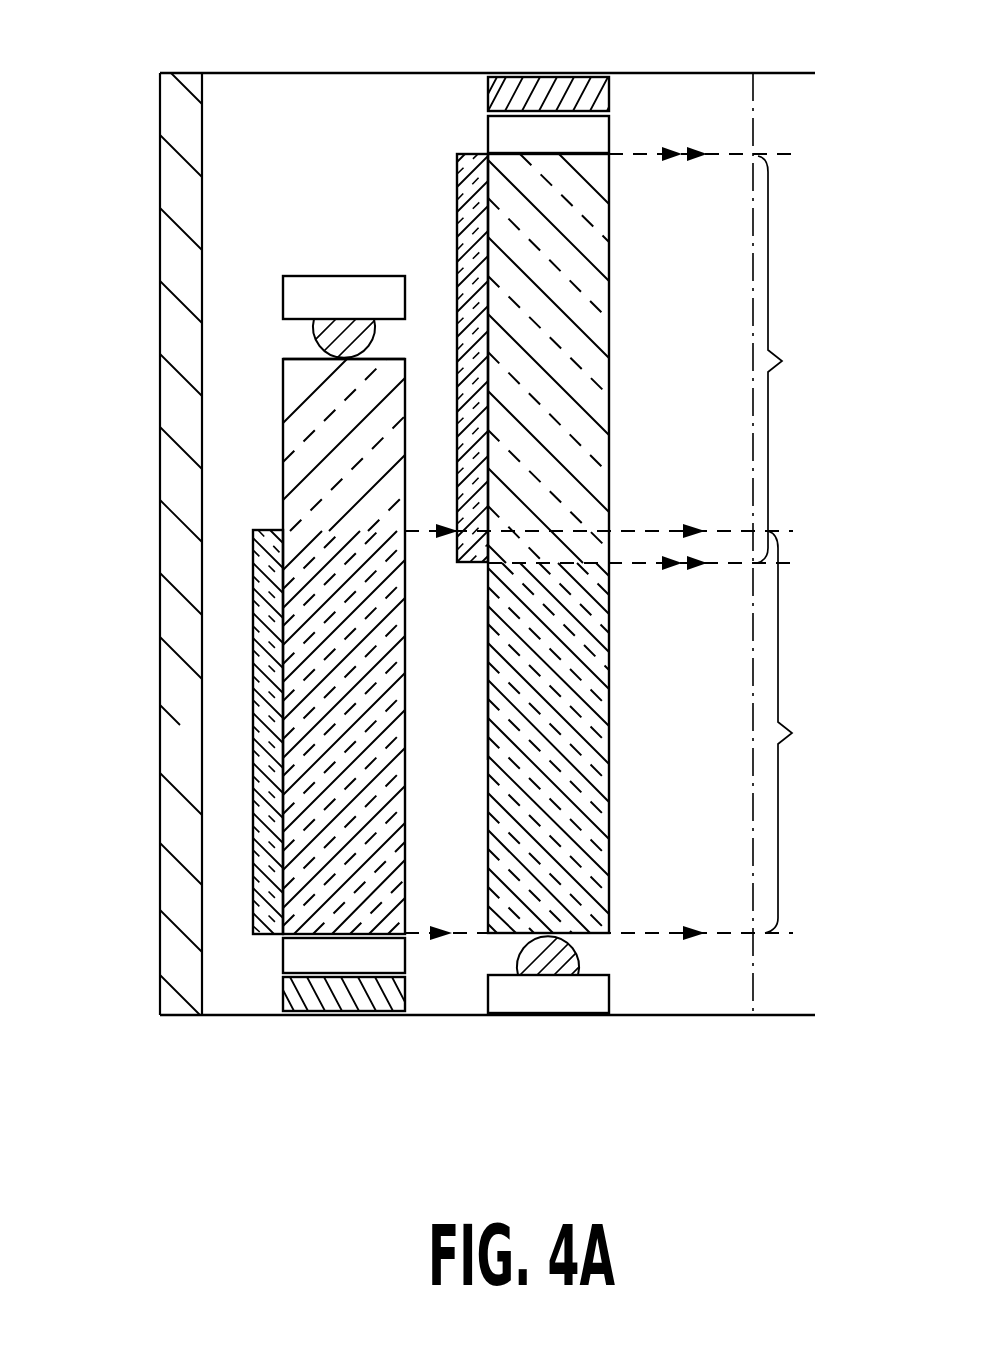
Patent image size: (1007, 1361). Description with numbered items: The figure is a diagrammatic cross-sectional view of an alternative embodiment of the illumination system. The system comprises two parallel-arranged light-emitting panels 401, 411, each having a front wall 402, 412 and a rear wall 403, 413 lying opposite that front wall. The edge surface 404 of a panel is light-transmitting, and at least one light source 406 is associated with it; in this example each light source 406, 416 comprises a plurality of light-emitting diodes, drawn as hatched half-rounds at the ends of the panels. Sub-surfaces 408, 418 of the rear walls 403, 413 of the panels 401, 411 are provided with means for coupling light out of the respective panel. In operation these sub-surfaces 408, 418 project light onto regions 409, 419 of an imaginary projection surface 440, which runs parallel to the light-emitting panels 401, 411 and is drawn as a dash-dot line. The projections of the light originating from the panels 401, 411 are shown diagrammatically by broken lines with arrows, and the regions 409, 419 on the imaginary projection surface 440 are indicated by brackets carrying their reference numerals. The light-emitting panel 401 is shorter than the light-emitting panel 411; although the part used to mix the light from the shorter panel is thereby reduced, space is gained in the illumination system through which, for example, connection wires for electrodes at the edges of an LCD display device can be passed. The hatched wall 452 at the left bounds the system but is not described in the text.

The light-emitting panel 401 is at (269, 646).
The front wall 402 is at (398, 787).
The rear wall 403 is at (285, 913).
The edge surface 404 is at (284, 375).
The light source 406 is at (330, 320).
The sub-surface 408 is at (262, 706).
The region 409 is at (805, 732).
The light-emitting panel 411 is at (589, 543).
The front wall 412 is at (603, 841).
The rear wall 413 is at (498, 690).
The light source 416 is at (568, 954).
The sub-surface 418 is at (457, 200).
The region 419 is at (795, 359).
The imaginary projection surface 440 is at (750, 132).
The housing wall 452 is at (177, 860).